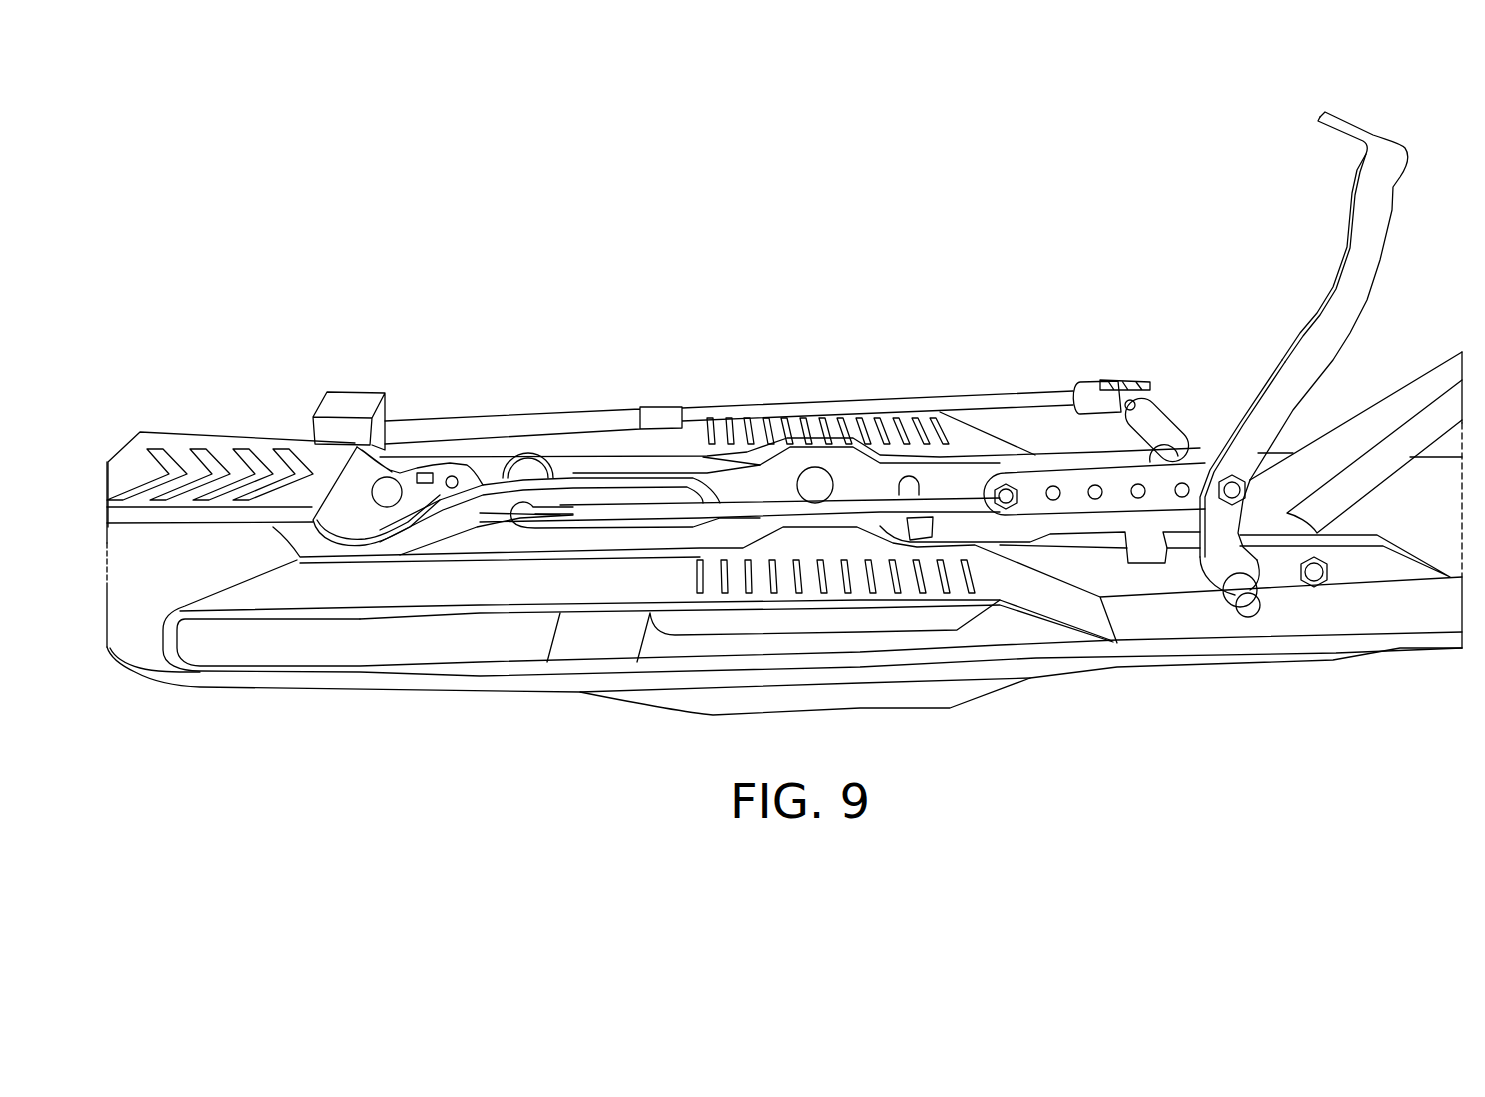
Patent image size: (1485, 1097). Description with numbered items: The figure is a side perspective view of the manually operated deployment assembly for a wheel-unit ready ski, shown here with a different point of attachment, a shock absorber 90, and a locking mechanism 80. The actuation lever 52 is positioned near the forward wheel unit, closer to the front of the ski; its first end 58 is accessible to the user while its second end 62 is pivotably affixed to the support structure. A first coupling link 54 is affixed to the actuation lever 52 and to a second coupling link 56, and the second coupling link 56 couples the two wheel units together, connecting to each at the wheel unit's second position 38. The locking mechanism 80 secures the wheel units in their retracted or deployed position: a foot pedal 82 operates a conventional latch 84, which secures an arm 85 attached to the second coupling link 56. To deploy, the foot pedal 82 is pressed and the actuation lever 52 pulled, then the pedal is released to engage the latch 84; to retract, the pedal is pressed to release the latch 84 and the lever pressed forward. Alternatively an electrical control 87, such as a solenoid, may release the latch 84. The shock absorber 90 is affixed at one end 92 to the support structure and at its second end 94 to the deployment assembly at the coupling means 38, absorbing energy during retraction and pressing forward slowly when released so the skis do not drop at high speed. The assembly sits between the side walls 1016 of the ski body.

The second position 38 is at (527, 473).
The actuation lever 52 is at (1277, 358).
The first coupling link 54 is at (1037, 488).
The second coupling link 56 is at (878, 510).
The first end 58 is at (1380, 150).
The second end 62 is at (1217, 567).
The locking mechanism 80 is at (295, 390).
The foot pedal 82 is at (222, 455).
The latch 84 is at (312, 543).
The arm 85 is at (433, 525).
The electrical control 87 is at (432, 472).
The shock absorber 90 is at (495, 420).
The one end 92 is at (356, 400).
The second end 94 is at (1100, 378).
The side walls 1016 is at (1283, 567).